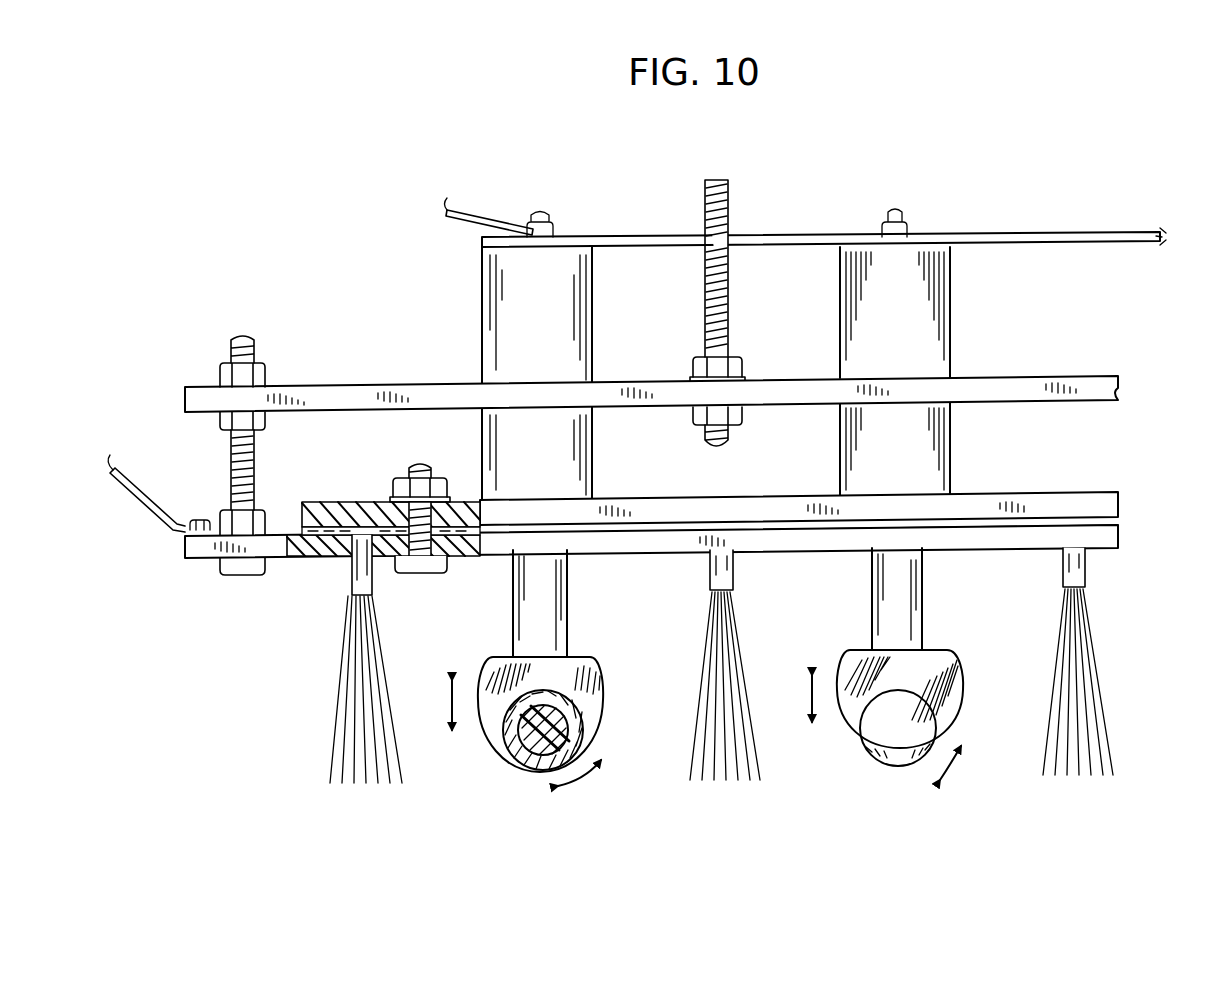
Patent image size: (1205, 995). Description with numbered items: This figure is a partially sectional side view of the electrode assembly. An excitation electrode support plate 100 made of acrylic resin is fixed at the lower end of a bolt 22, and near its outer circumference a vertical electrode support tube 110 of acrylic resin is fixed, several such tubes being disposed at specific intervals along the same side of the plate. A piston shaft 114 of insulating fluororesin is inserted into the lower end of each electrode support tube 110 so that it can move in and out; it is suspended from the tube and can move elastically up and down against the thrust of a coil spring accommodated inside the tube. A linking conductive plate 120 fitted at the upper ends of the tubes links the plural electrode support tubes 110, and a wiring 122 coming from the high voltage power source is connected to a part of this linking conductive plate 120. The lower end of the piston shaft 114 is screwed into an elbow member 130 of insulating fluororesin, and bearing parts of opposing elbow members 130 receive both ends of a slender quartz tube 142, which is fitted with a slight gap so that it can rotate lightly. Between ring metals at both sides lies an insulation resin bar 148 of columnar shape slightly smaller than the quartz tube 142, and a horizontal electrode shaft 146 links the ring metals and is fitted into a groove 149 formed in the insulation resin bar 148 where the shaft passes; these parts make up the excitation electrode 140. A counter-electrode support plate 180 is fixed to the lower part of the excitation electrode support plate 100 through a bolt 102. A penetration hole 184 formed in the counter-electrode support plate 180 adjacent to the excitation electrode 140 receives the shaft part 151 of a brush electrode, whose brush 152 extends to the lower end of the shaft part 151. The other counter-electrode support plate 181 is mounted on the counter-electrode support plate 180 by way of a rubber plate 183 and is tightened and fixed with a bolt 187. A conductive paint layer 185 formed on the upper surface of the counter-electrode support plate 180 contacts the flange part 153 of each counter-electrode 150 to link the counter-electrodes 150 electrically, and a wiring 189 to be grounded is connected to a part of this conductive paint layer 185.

The bolt 22 is at (728, 200).
The excitation electrode support plate 100 is at (392, 385).
The bolt 102 is at (230, 455).
The electrode support tube 110 is at (488, 285).
The piston shaft 114 is at (532, 603).
The linking conductive plate 120 is at (1050, 236).
The wiring 122 is at (470, 213).
The elbow member 130 is at (570, 665).
The excitation electrode 140 is at (508, 774).
The quartz tube 142 is at (578, 703).
The electrode shaft 146 is at (535, 770).
The insulation resin bar 148 is at (585, 728).
The groove 149 is at (520, 740).
The counter-electrode 150 is at (328, 766).
The shaft part 151 is at (345, 580).
The brush 152 is at (352, 705).
The flange part 153 is at (323, 502).
The counter-electrode support plate 180 is at (193, 548).
The other counter-electrode support plate 181 is at (1050, 494).
The rubber plate 183 is at (468, 498).
The penetration hole 184 is at (372, 528).
The conductive paint layer 185 is at (297, 553).
The bolt 187 is at (418, 575).
The wiring 189 is at (143, 482).